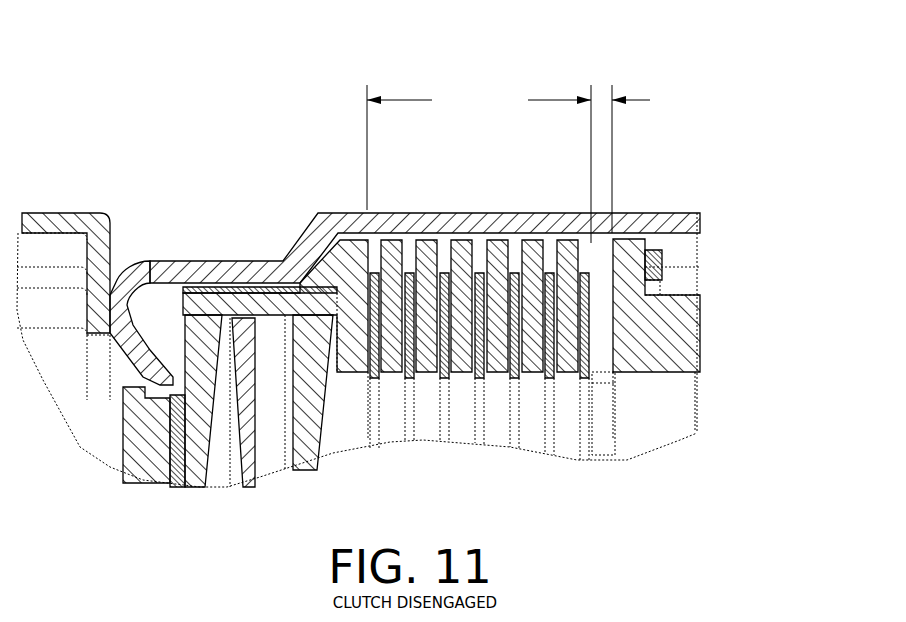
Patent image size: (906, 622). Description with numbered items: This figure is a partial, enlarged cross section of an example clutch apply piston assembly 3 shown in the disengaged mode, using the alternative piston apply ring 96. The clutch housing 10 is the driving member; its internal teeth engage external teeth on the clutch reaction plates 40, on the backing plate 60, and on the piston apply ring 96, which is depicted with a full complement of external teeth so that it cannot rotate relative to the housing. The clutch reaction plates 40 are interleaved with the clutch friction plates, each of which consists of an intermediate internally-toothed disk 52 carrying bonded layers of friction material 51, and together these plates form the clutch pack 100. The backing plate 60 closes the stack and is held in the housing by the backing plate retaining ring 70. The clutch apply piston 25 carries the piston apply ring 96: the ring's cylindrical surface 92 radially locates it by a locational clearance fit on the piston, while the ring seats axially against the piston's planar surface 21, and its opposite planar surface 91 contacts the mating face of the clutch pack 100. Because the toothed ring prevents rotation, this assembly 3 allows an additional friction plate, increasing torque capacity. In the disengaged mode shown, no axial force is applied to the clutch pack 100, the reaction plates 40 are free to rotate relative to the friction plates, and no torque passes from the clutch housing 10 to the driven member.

The clutch apply piston assembly 3 is at (637, 490).
The clutch housing 10 is at (190, 260).
The planar surface 21 is at (340, 297).
The clutch apply piston 25 is at (263, 290).
The clutch reaction plates 40 is at (570, 238).
The friction material 51 is at (580, 272).
The internally-toothed disk 52 is at (374, 380).
The backing plate 60 is at (631, 241).
The backing plate retaining ring 70 is at (655, 250).
The planar surface 91 is at (369, 337).
The cylindrical surface 92 is at (316, 296).
The piston apply ring 96 is at (322, 255).
The clutch pack 100 is at (488, 75).